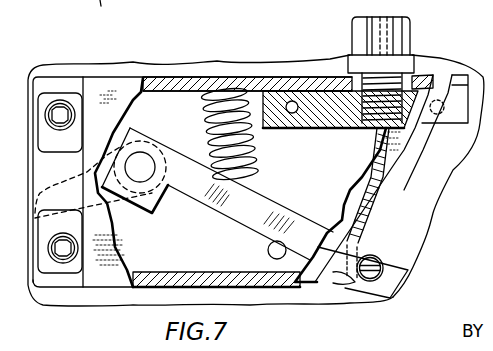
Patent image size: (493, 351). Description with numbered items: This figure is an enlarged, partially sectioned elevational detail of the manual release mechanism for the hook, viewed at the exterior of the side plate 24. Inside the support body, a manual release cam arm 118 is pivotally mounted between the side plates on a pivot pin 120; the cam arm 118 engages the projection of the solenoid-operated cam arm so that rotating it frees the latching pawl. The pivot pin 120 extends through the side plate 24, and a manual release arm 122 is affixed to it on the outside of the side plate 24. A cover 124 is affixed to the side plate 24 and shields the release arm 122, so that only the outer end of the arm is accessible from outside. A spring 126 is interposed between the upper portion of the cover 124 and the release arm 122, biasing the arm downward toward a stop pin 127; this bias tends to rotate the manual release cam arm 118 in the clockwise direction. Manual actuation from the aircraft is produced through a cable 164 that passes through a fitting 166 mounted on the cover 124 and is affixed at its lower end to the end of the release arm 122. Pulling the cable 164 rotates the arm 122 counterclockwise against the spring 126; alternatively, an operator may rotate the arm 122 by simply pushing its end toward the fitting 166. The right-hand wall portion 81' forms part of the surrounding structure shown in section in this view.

The side plate 24 is at (432, 236).
The housing side wall 81' is at (443, 176).
The manual release cam arm 118 is at (40, 160).
The pivot pin 120 is at (142, 162).
The manual release arm 122 is at (388, 286).
The cover 124 is at (115, 278).
The spring 126 is at (250, 148).
The stop pin 127 is at (268, 248).
The cable 164 is at (380, 205).
The fitting 166 is at (410, 33).